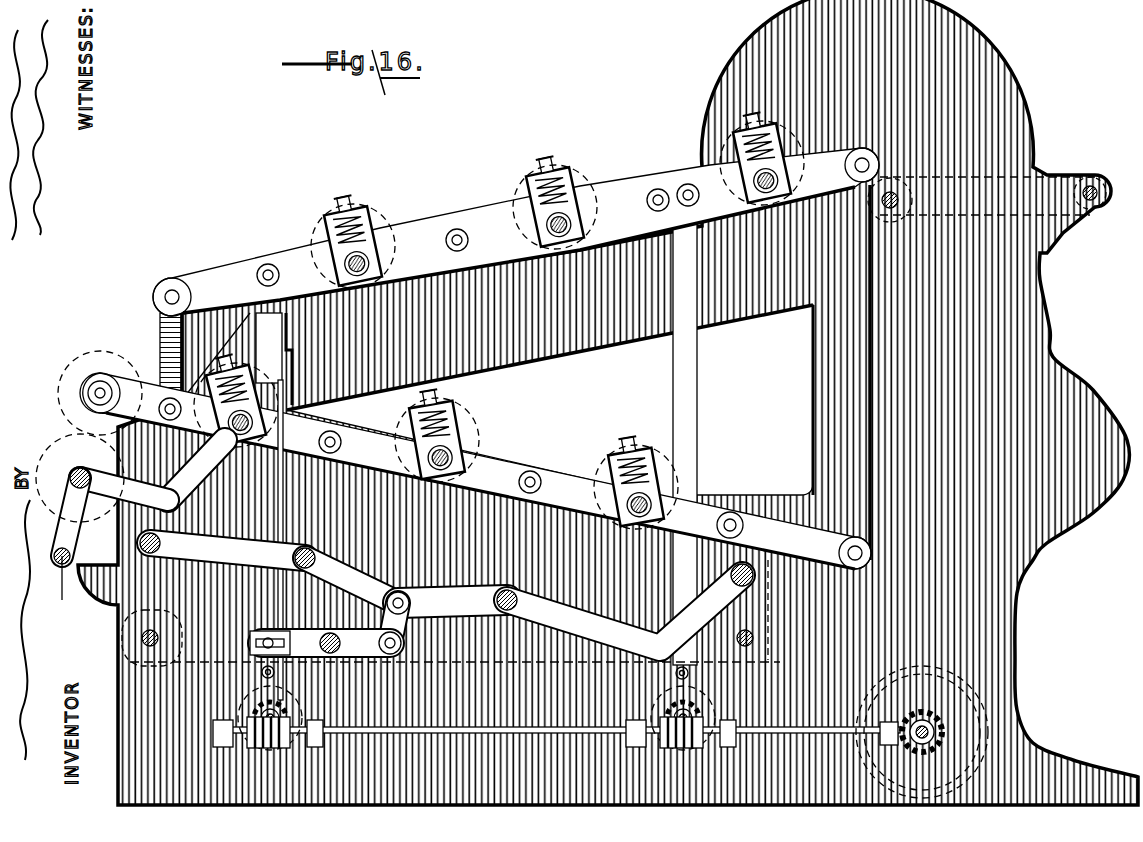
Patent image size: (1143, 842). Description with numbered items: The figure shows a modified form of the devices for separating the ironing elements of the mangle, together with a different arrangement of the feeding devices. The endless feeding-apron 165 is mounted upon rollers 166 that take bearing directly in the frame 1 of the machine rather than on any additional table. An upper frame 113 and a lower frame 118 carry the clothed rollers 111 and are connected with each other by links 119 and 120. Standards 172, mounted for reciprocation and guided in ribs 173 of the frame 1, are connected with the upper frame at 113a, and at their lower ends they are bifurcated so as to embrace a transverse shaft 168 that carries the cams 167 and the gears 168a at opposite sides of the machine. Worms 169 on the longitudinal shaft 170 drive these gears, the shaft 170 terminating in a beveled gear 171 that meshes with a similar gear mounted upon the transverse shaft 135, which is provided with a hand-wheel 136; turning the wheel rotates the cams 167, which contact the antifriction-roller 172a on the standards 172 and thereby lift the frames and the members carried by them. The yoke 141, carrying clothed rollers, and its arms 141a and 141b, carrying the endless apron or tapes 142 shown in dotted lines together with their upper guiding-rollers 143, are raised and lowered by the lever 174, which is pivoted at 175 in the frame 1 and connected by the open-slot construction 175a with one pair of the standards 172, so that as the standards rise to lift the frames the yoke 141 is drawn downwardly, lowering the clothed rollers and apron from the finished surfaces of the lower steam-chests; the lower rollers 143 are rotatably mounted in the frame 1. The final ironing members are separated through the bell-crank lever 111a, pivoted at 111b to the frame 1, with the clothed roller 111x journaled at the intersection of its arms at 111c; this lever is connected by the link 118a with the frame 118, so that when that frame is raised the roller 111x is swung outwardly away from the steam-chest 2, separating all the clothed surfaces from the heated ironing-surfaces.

The main frame 1 is at (608, 402).
The steam-chest 2 is at (526, 388).
The clothed rollers 111 is at (499, 319).
The bell-crank lever 111a is at (52, 518).
The pivot of bell-crank lever 111b is at (68, 546).
The journal of roller 111x 111c is at (80, 470).
The clothed roller of final ironing members 111x is at (80, 478).
The upper frame 113 is at (516, 232).
The connection of standards to upper frame 113a is at (272, 262).
The lower frame 118 is at (464, 455).
The link 118a is at (194, 475).
The link 119 is at (166, 350).
The link 120 is at (850, 352).
The transverse shaft 135 is at (935, 732).
The hand-wheel 136 is at (950, 690).
The yoke 141 is at (447, 622).
The arm of yoke 141a is at (637, 638).
The arm of yoke 141b is at (274, 573).
The endless apron or tapes 142 is at (770, 608).
The apron guiding-rollers 143 is at (300, 556).
The endless feeding-apron 165 is at (1080, 174).
The rollers 166 is at (900, 199).
The cams 167 is at (282, 708).
The transverse shaft 168 is at (255, 710).
The gears 168a is at (726, 668).
The worms 169 is at (280, 748).
The longitudinal shaft 170 is at (540, 734).
The beveled gear 171 is at (910, 712).
The standards 172 is at (685, 385).
The antifriction-roller 172a is at (264, 672).
The ribs 173 is at (262, 333).
The lever 174 is at (308, 642).
The pivot of lever 175 is at (290, 672).
The open-slot construction 175a is at (266, 638).